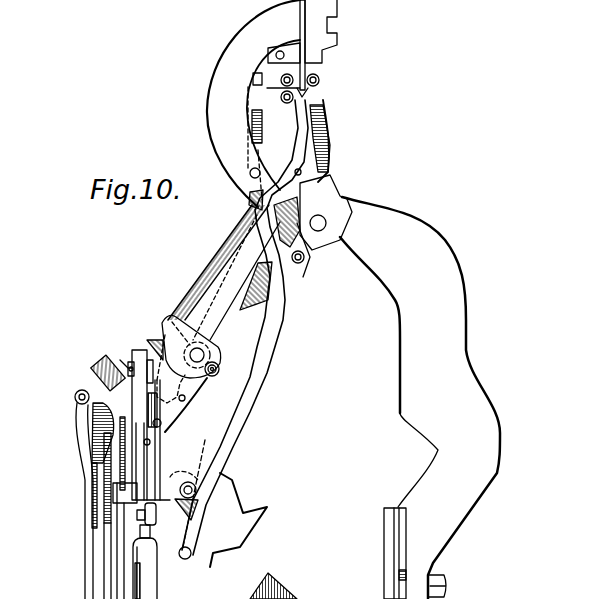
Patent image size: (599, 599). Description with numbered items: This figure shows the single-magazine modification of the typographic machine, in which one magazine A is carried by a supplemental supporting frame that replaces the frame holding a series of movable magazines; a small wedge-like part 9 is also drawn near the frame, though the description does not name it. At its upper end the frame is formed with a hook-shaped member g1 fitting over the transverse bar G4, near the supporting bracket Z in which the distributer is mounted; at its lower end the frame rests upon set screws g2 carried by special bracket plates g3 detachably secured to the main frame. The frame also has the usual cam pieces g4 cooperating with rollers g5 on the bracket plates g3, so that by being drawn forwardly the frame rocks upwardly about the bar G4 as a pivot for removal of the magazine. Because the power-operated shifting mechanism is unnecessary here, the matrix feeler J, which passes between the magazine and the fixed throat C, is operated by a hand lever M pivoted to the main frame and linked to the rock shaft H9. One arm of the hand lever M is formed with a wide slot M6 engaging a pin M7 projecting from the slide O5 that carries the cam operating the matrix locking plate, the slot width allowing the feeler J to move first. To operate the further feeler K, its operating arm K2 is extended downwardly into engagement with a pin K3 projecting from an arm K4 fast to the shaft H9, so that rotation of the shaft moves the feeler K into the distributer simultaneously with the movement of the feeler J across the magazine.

The blade or feeler K is at (272, 62).
The pivoted lever K2 is at (248, 128).
The hook-shaped member g1 is at (330, 203).
The supporting bracket Z is at (420, 398).
The transverse bar G4 is at (318, 230).
The magazine A is at (228, 252).
The wedge 9 is at (248, 300).
The cam pieces g4 is at (167, 332).
The special bracket plates g3 is at (192, 388).
The rollers g5 is at (220, 370).
The set screws g2 is at (185, 413).
The blade or matrix feeler J is at (122, 352).
The fixed throat C is at (95, 428).
The slide O5 is at (130, 473).
The wide slot M6 is at (145, 512).
The pin M7 is at (137, 520).
The hand lever M is at (125, 560).
The rock shaft H9 is at (212, 477).
The arm K4 is at (197, 535).
The pin K3 is at (186, 560).